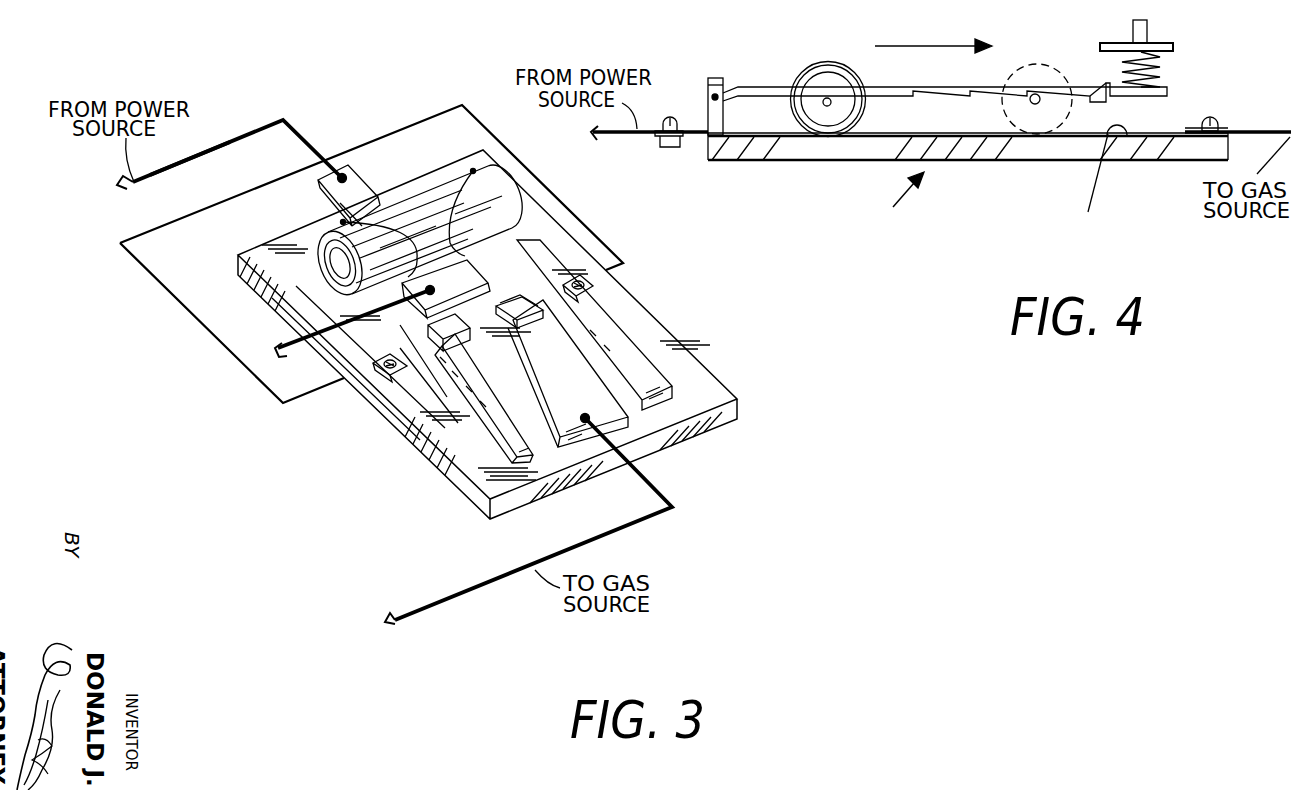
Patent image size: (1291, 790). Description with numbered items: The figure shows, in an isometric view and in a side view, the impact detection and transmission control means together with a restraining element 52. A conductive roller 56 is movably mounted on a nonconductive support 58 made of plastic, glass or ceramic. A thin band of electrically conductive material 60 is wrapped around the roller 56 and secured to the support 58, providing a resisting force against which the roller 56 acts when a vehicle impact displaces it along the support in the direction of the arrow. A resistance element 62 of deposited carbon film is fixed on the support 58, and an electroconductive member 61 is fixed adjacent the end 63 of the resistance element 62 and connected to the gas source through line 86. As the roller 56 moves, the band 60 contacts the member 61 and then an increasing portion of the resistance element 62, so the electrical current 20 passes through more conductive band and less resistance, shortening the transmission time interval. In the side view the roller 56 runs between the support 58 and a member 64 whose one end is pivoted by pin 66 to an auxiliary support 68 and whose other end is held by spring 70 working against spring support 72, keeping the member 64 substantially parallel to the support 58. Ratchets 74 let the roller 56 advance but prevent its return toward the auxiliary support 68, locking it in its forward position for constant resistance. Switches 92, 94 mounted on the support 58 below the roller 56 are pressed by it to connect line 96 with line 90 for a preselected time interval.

In FIG. 3, the electrical current 20 is at (247, 139).
In FIG. 4, the electrical current 20 is at (613, 137).
In FIG. 4, the restraining element 52 is at (893, 236).
In FIG. 3, the roller 56 is at (325, 240).
In FIG. 4, the roller 56 is at (806, 78).
In FIG. 3, the nonconductive support 58 is at (388, 420).
In FIG. 4, the nonconductive support 58 is at (850, 164).
In FIG. 3, the electrically conductive material 60 is at (430, 213).
In FIG. 4, the electrically conductive material 60 is at (833, 62).
In FIG. 3, the electroconductive member 61 is at (473, 279).
In FIG. 3, the resistance element 62 is at (605, 412).
In FIG. 4, the resistance element 62 is at (1088, 212).
In FIG. 3, the end of resistance element 63 is at (515, 302).
In FIG. 4, the member 64 is at (752, 88).
In FIG. 4, the pin 66 is at (713, 96).
In FIG. 4, the auxiliary support 68 is at (716, 118).
In FIG. 4, the spring 70 is at (1158, 75).
In FIG. 4, the spring support 72 is at (1175, 47).
In FIG. 4, the ratchets 74 is at (1107, 87).
In FIG. 3, the line 86 is at (300, 356).
In FIG. 3, the line 90 is at (492, 590).
In FIG. 4, the line 90 is at (1262, 132).
In FIG. 3, the switch 92 is at (597, 282).
In FIG. 3, the switch 94 is at (432, 348).
In FIG. 3, the line 96 is at (168, 170).